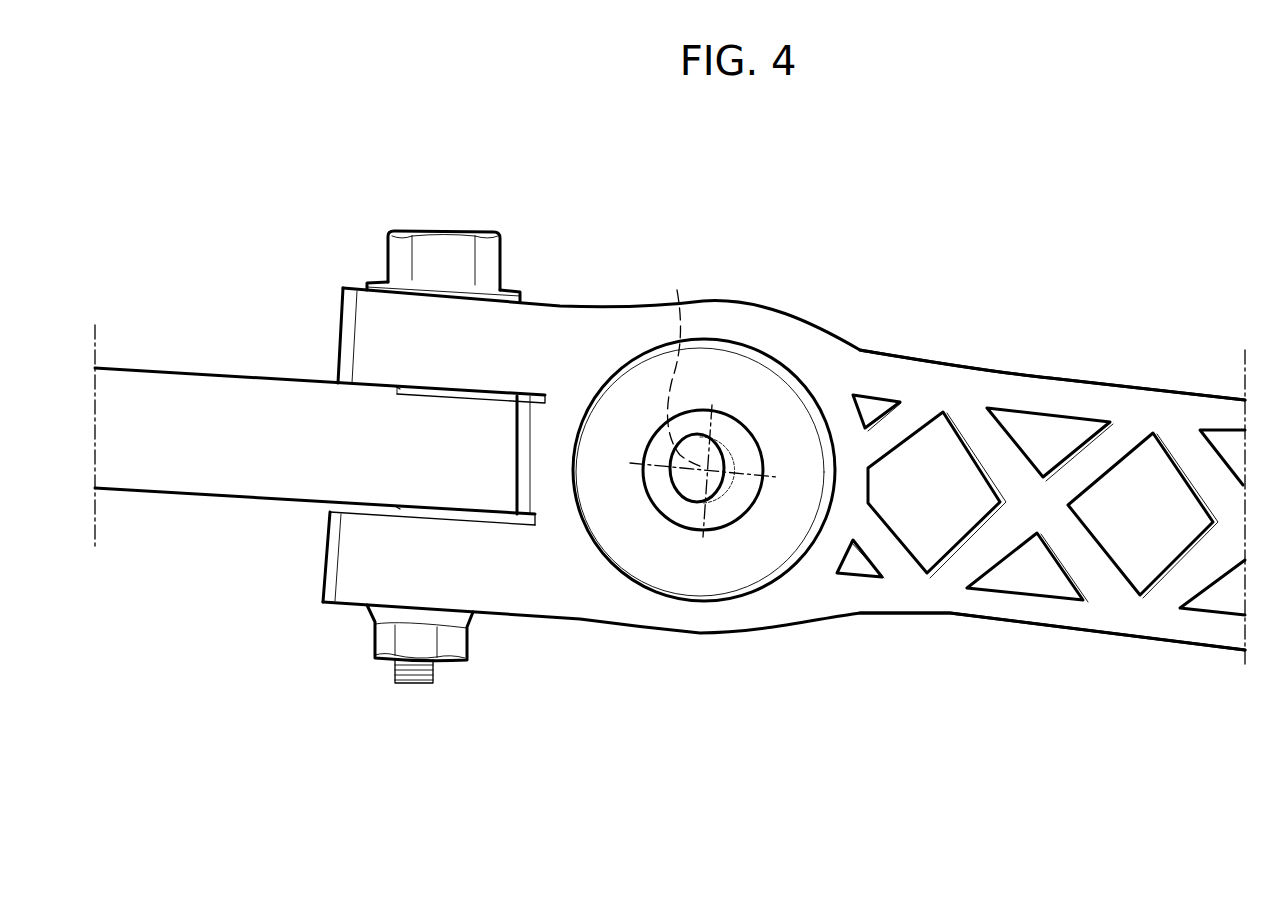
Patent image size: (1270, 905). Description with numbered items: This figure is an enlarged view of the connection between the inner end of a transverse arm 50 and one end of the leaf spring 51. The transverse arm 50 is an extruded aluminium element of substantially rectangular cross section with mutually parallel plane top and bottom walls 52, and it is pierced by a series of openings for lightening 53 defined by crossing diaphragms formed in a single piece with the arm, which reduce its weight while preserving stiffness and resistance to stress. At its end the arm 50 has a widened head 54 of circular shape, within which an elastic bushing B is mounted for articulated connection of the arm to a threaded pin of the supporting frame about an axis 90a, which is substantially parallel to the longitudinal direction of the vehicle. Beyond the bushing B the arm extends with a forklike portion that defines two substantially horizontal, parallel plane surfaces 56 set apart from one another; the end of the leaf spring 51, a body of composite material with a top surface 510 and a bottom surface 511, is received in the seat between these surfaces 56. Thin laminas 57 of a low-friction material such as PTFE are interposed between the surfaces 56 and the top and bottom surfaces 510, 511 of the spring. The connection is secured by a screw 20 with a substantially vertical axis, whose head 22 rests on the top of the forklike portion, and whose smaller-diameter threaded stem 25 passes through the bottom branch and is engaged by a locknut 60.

The screw 20 is at (430, 410).
The head 22 is at (398, 245).
The threaded stem 25 is at (412, 678).
The transverse arm 50 is at (670, 452).
The leaf spring 51 is at (670, 465).
The top surface 510 is at (230, 372).
The bottom surface 511 is at (180, 497).
The top and bottom walls 52 is at (1000, 368).
The openings for lightening 53 is at (1100, 490).
The widened head 54 is at (760, 301).
The plane surfaces 56 is at (399, 389).
The thin laminas 57 is at (495, 388).
The locknut 60 is at (468, 640).
The axis 90a is at (660, 290).
The elastic bushing B is at (740, 555).